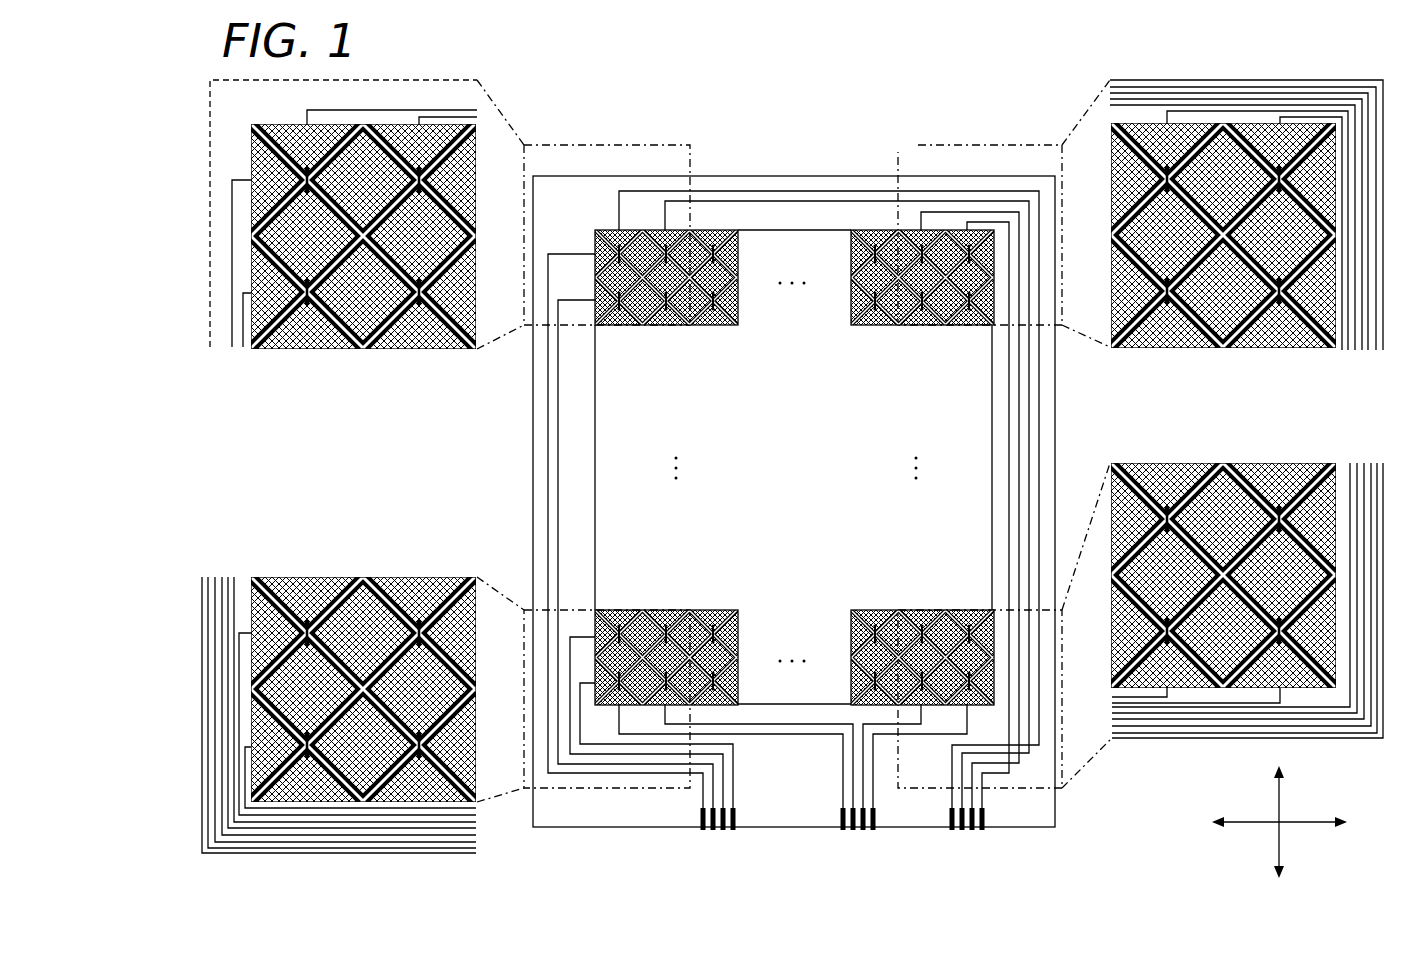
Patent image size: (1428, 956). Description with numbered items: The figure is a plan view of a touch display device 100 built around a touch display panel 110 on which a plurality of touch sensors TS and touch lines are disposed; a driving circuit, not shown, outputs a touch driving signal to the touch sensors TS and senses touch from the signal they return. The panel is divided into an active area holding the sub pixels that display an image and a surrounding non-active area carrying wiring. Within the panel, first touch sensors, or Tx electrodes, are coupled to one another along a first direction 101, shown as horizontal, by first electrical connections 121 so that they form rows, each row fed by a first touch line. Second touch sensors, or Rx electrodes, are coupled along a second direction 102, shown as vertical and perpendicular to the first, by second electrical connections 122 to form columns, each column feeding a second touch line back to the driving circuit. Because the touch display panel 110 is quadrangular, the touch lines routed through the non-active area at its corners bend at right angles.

The touch display device 100 is at (540, 50).
The touch display panel 110 is at (727, 175).
The first electrical connections 121 is at (303, 313).
The second electrical connections 122 is at (373, 347).
The first direction 101 is at (1313, 822).
The second direction 102 is at (1278, 800).
The touch sensors TS is at (877, 232).